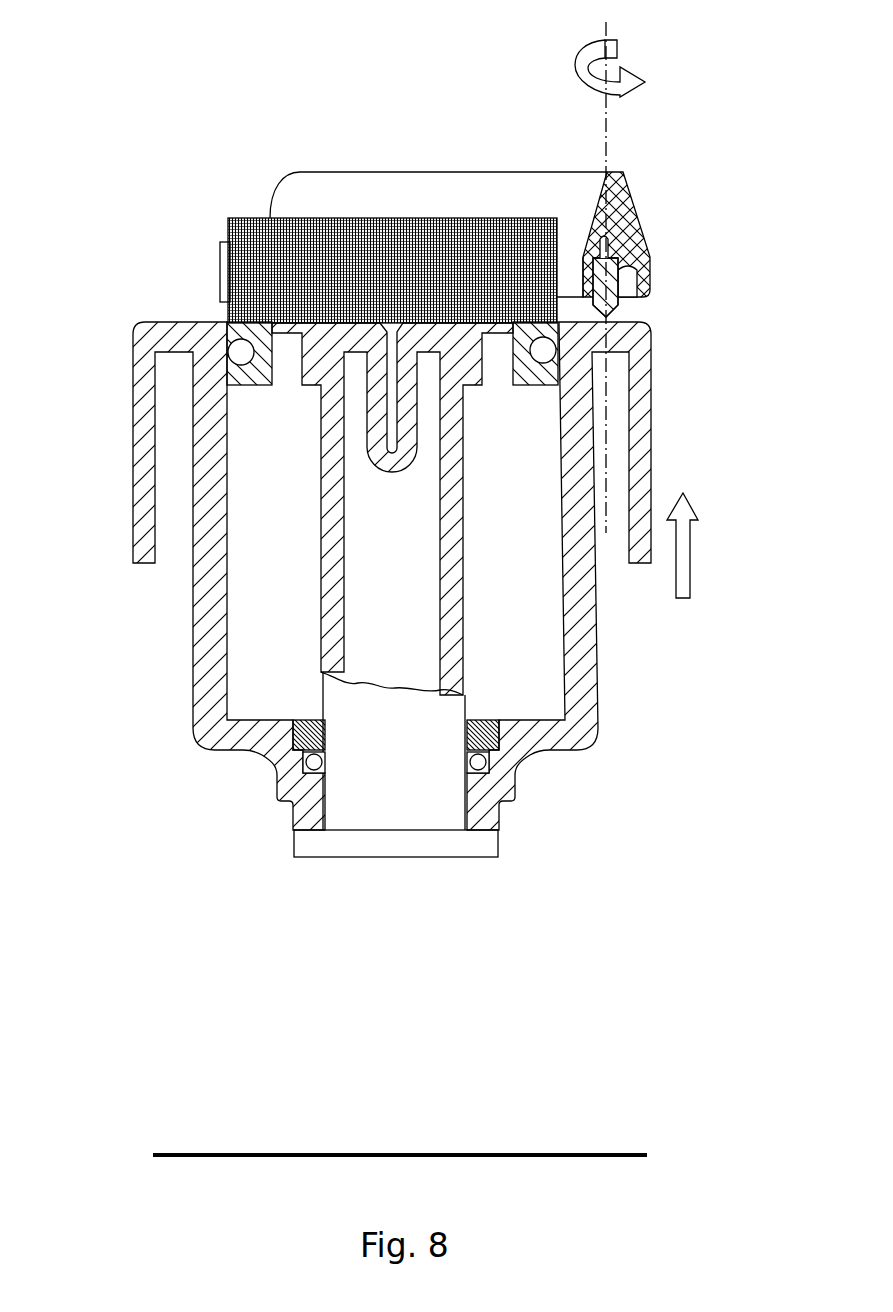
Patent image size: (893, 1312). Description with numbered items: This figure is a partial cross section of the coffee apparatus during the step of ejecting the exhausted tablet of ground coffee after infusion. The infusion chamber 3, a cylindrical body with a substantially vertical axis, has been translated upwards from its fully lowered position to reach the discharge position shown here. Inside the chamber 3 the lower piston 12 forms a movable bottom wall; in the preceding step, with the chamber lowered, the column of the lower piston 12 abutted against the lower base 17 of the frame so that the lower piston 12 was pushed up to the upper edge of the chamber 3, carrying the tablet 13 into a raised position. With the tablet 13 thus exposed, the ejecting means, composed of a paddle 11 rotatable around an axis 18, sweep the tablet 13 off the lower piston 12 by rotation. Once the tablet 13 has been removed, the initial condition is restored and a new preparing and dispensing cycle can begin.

The infusion chamber 3 is at (193, 687).
The paddle 11 is at (357, 190).
The lower piston 12 is at (238, 323).
The coffee tablet 13 is at (250, 237).
The lower base 17 is at (592, 1152).
The axis 18 is at (607, 128).